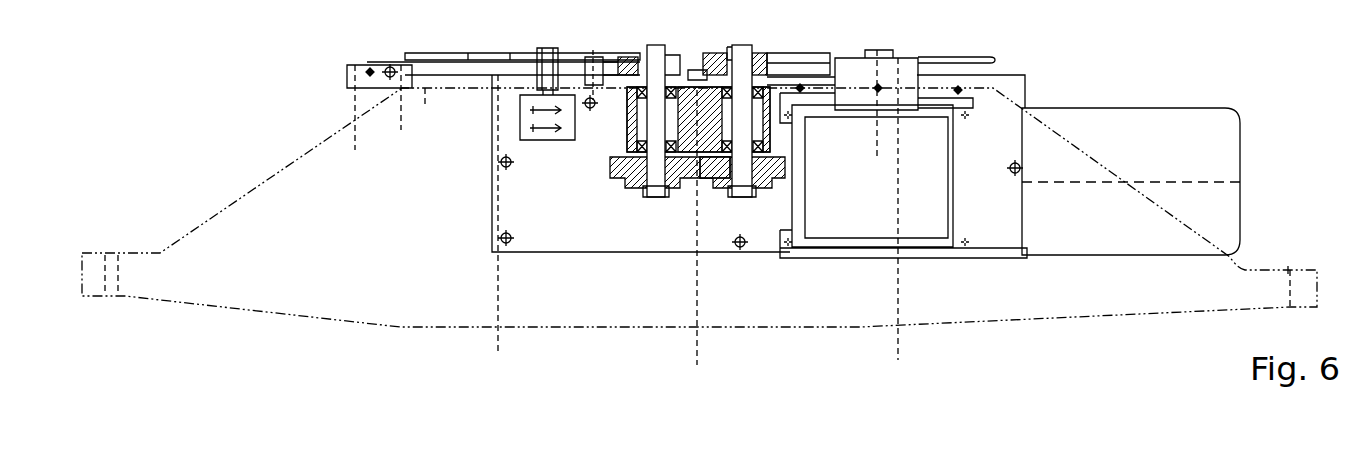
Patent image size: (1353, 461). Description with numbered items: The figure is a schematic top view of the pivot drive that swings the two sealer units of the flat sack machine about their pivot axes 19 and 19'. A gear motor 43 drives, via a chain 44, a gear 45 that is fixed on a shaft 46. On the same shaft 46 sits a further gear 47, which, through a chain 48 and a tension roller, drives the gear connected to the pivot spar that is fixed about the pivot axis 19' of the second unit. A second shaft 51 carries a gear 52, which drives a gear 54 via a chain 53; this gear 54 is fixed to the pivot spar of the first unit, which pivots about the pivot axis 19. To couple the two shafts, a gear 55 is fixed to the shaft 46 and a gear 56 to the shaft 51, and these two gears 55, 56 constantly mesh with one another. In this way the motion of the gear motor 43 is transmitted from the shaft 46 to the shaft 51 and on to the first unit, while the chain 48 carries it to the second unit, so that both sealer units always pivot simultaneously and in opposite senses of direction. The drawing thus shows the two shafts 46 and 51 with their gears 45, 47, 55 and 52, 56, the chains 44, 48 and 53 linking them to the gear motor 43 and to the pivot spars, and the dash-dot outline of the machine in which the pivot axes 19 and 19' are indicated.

The pivot axis 19 is at (611, 225).
The pivot axis 19' is at (903, 216).
The gear motor 43 is at (1055, 230).
The chain 44 is at (813, 77).
The gear 45 is at (712, 72).
The shaft 46 is at (737, 130).
The gear 47 is at (763, 57).
The chain 48 is at (790, 55).
The shaft 51 is at (650, 135).
The gear 52 is at (638, 53).
The chain 53 is at (603, 55).
The gear 54 is at (523, 55).
The gear 55 is at (715, 178).
The gear 56 is at (672, 158).